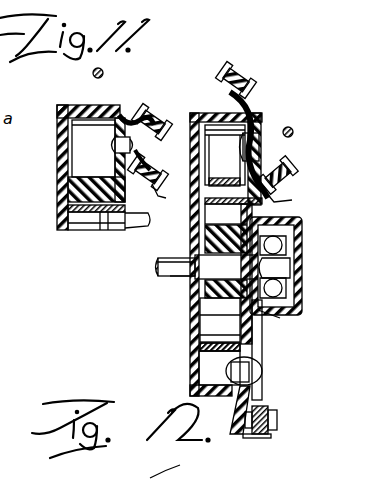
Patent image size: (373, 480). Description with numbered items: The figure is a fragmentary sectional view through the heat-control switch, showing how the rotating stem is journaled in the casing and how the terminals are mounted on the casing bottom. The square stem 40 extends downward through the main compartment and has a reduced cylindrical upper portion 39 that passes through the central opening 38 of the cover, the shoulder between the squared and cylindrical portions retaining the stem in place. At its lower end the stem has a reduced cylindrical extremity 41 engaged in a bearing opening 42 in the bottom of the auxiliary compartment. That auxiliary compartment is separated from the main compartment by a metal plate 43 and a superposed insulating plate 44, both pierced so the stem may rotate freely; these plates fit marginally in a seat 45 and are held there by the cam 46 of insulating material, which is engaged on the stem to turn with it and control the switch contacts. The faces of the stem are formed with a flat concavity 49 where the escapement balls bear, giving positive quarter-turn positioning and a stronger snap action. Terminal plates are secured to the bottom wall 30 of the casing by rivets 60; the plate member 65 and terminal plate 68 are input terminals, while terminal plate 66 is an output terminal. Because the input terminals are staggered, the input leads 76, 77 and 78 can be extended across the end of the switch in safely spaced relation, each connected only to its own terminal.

The bottom wall 30 is at (252, 346).
The central opening 38 is at (185, 285).
The reduced cylindrical upper portion 39 is at (168, 272).
The square stem 40 is at (238, 276).
The reduced cylindrical extremity 41 is at (300, 272).
The bearing opening 42 is at (293, 290).
The metal plate 43 is at (292, 240).
The insulating plate 44 is at (278, 313).
The seat 45 is at (280, 226).
The cam 46 is at (205, 236).
The flat concavity 49 is at (302, 258).
The rivet 60 is at (254, 385).
The plate member 65 is at (257, 122).
The terminal plate 66 is at (234, 408).
The terminal plate 68 is at (130, 112).
The input lead 76 is at (162, 120).
The input lead 77 is at (93, 73).
The input lead 78 is at (298, 166).